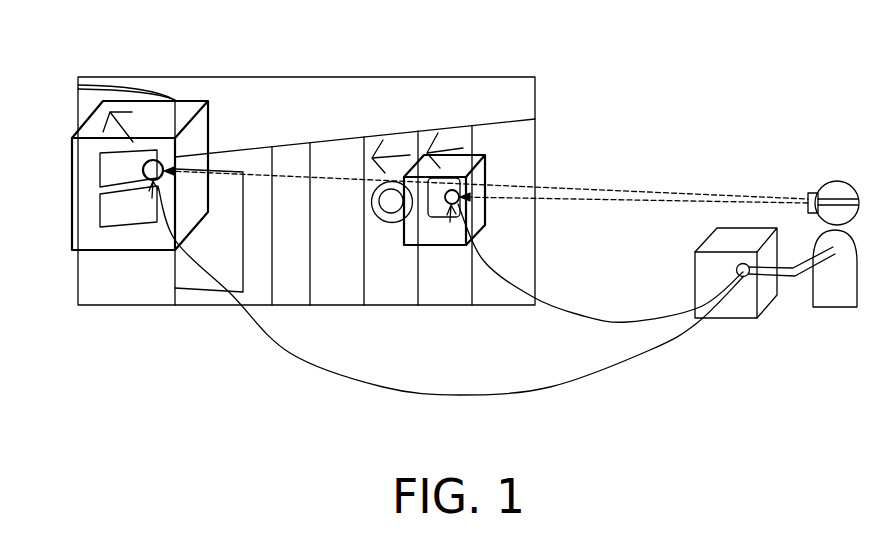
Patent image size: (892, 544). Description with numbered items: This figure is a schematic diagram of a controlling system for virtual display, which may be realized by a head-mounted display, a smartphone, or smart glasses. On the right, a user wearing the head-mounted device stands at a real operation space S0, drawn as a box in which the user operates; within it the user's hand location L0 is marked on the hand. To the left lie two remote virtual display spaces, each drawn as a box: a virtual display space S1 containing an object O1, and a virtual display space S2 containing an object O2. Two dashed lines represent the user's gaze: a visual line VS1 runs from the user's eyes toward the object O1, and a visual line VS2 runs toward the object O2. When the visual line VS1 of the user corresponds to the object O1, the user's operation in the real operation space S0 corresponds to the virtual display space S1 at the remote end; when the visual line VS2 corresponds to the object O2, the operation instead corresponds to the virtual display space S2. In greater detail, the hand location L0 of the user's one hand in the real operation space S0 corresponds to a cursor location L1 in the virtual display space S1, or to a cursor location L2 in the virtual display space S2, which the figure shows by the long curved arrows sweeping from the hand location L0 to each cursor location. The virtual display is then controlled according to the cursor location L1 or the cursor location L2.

The virtual display space S1 is at (158, 100).
The object O1 is at (108, 175).
The cursor location L1 is at (143, 170).
The virtual display space S2 is at (487, 165).
The object O2 is at (428, 200).
The cursor location L2 is at (459, 201).
The visual line VS1 is at (583, 188).
The visual line VS2 is at (670, 200).
The real operation space S0 is at (733, 228).
The hand location L0 is at (748, 278).